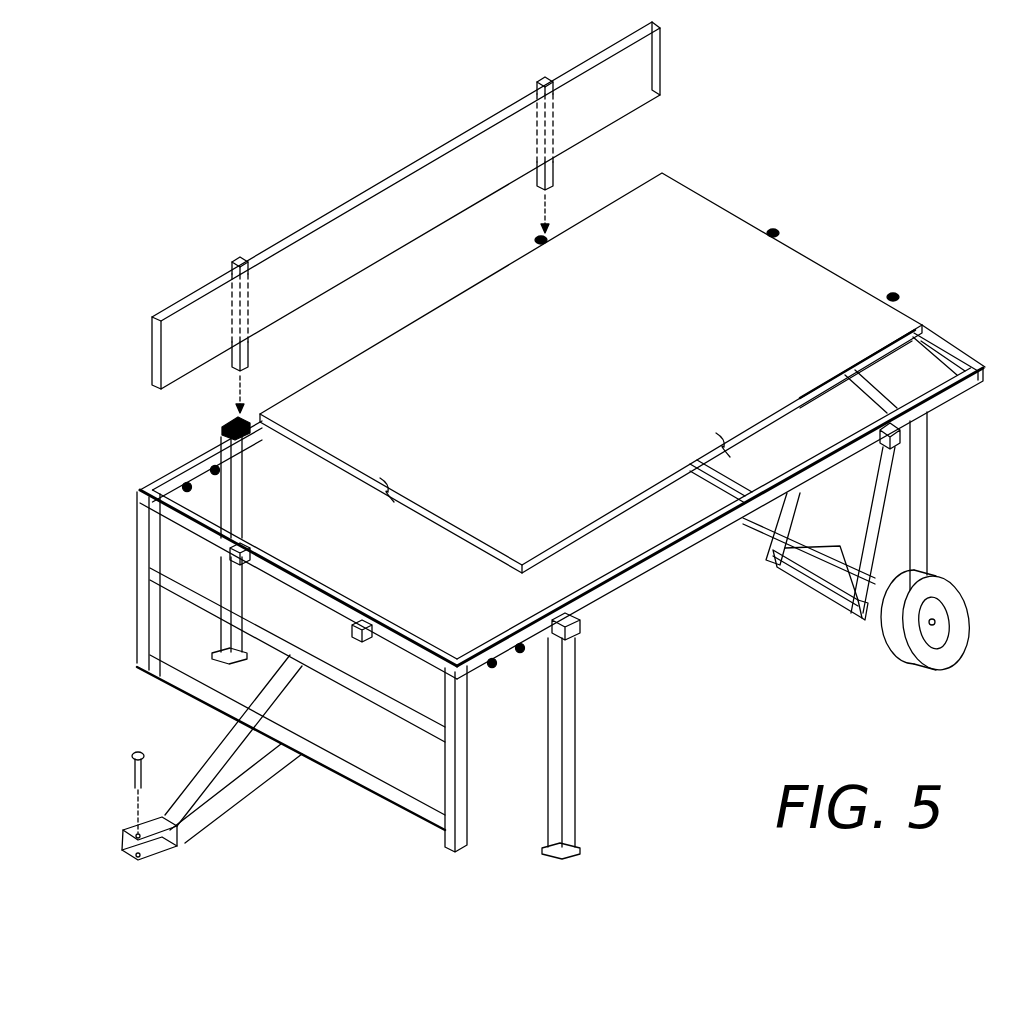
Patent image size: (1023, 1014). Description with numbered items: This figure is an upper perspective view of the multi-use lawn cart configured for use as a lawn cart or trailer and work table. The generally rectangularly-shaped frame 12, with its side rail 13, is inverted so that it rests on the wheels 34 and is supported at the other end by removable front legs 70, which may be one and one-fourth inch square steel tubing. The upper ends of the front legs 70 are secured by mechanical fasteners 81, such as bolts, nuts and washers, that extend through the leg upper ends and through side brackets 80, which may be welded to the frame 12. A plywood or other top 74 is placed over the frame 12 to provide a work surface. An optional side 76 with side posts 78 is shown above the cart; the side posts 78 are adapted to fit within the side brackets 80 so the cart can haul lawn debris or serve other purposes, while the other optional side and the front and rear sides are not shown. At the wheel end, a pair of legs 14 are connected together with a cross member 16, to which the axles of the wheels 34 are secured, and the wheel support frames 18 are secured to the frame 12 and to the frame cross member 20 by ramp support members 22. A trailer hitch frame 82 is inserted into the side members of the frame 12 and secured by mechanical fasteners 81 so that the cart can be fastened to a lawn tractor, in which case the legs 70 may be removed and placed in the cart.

The frame 12 is at (658, 570).
The side rail 13 is at (320, 572).
The legs 14 is at (929, 501).
The cross member 16 is at (712, 496).
The wheel support frames 18 is at (822, 594).
The frame cross member 20 is at (874, 380).
The ramp support members 22 is at (878, 508).
The wheels 34 is at (943, 573).
The front legs 70 is at (244, 500).
The top 74 is at (662, 175).
The sides 76 is at (152, 322).
The side posts 78 is at (248, 360).
The side brackets 80 is at (236, 420).
The mechanical fasteners 81 is at (222, 463).
The trailer hitch frame 82 is at (137, 602).